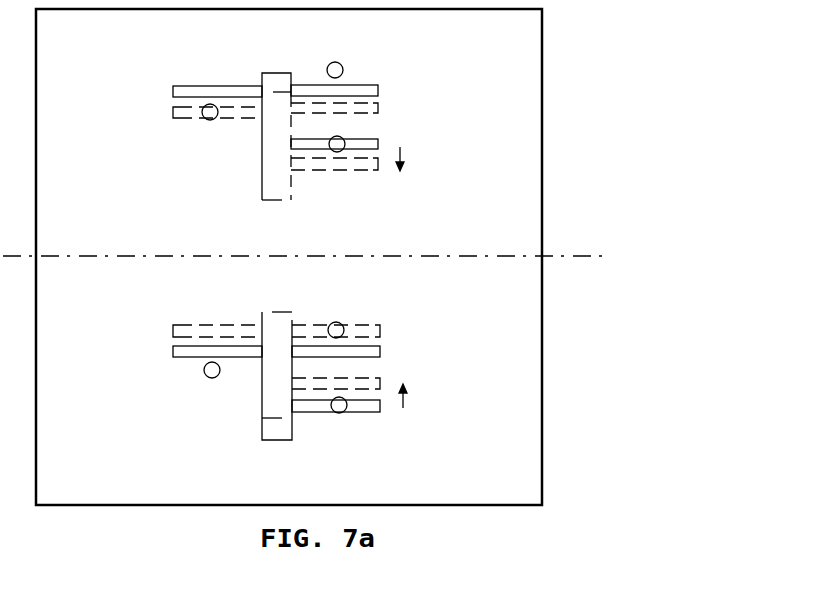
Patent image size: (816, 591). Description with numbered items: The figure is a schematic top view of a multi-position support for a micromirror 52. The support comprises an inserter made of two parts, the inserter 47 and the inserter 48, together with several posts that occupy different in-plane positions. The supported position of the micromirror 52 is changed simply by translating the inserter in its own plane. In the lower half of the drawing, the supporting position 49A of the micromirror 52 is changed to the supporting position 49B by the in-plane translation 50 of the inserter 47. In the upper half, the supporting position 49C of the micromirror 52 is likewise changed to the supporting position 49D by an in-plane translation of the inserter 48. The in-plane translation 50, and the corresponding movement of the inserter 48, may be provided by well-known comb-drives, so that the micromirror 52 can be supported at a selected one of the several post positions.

The inserter 47 is at (260, 442).
The inserter 48 is at (267, 183).
The supporting position 49A is at (342, 410).
The supporting position 49B is at (343, 325).
The supporting position 49C is at (345, 142).
The supporting position 49D is at (207, 117).
The in-plane translation 50 is at (408, 402).
The micromirror 52 is at (408, 157).